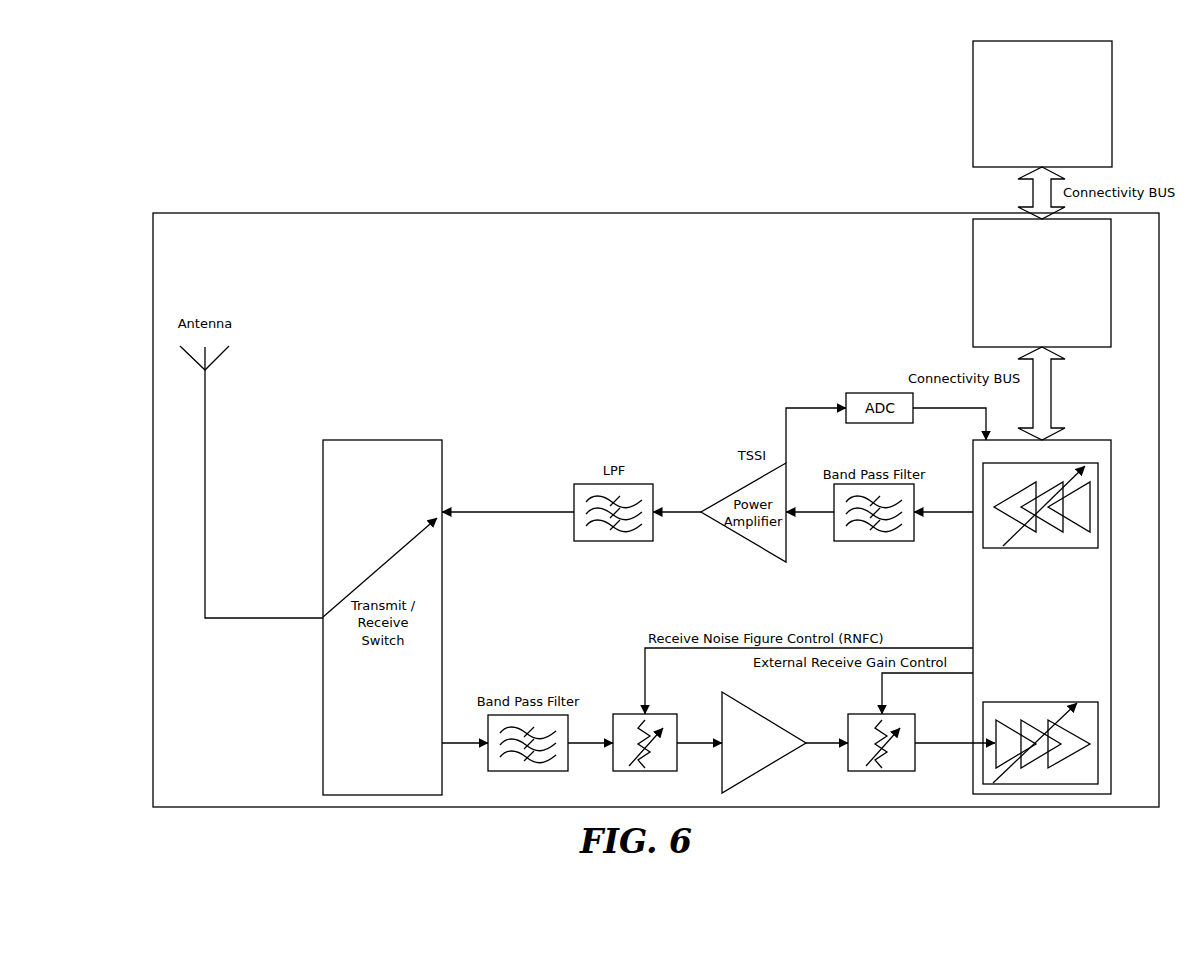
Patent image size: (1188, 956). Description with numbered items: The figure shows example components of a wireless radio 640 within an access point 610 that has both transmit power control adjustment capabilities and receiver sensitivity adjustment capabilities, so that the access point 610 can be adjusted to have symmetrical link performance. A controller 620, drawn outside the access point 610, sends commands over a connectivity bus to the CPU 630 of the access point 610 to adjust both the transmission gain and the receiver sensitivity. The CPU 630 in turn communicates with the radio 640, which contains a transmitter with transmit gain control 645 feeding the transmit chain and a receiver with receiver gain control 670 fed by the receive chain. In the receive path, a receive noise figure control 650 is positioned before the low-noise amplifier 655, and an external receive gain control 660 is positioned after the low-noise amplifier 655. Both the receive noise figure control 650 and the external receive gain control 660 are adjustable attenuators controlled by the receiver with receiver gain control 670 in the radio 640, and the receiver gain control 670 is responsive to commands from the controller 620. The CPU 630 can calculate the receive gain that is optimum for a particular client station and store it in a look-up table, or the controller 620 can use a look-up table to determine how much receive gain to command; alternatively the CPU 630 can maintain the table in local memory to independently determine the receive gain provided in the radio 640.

The access point 610 is at (315, 213).
The controller 620 is at (1112, 87).
The CPU 630 is at (973, 306).
The wireless radio 640 is at (973, 634).
The transmitter with transmit gain control 645 is at (1099, 510).
The receive noise figure control (RNFC) 650 is at (621, 715).
The low-noise amplifier 655 is at (722, 718).
The external receive gain control 660 is at (849, 729).
The receiver with receiver gain control 670 is at (1098, 734).